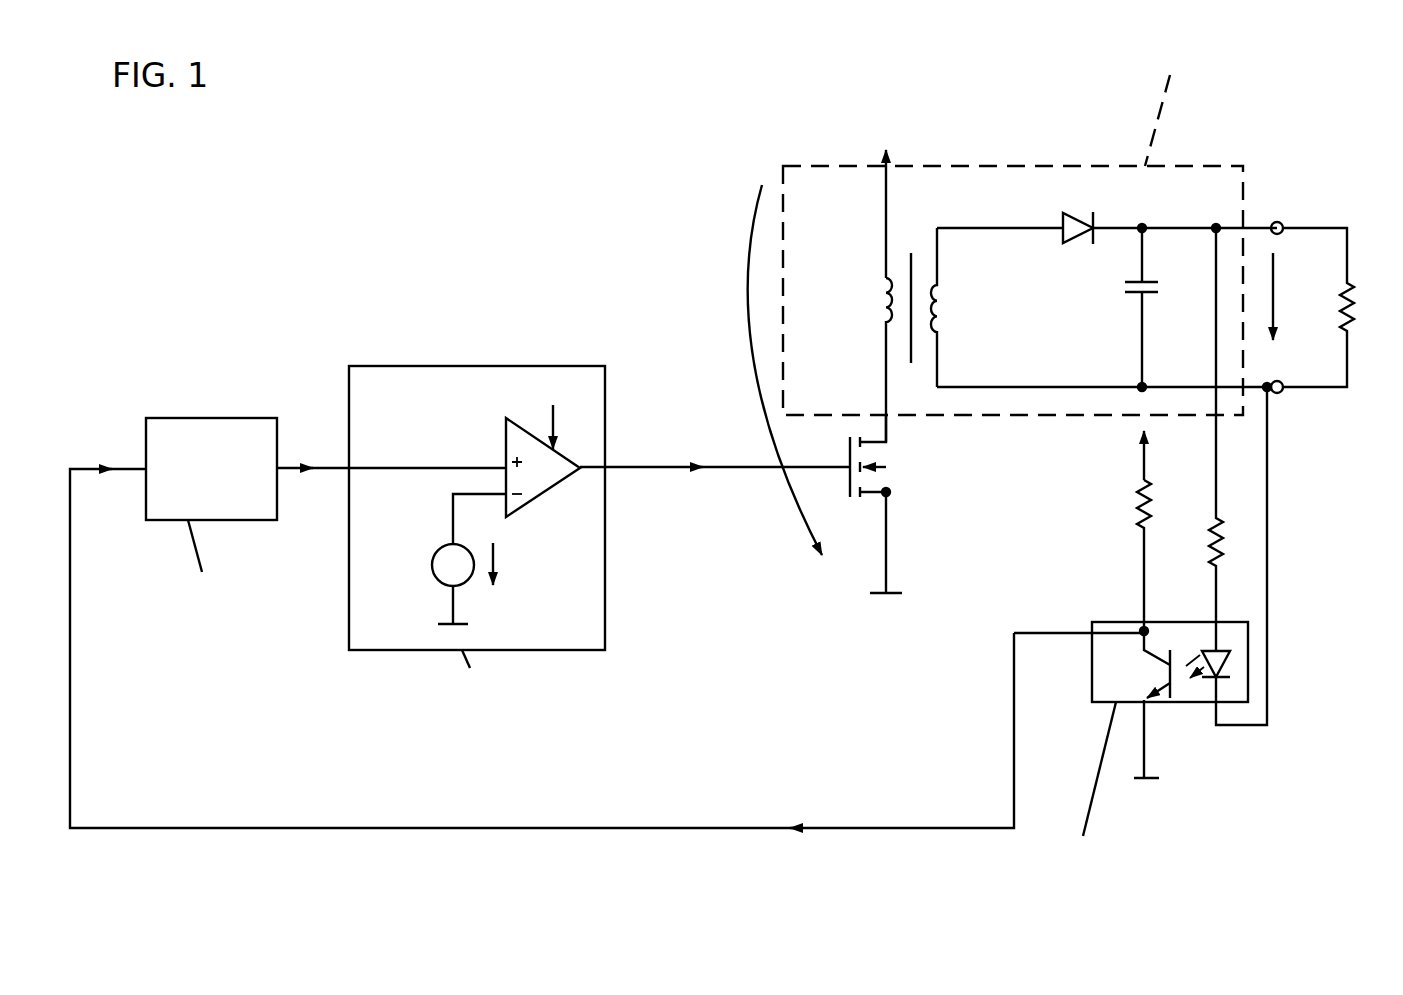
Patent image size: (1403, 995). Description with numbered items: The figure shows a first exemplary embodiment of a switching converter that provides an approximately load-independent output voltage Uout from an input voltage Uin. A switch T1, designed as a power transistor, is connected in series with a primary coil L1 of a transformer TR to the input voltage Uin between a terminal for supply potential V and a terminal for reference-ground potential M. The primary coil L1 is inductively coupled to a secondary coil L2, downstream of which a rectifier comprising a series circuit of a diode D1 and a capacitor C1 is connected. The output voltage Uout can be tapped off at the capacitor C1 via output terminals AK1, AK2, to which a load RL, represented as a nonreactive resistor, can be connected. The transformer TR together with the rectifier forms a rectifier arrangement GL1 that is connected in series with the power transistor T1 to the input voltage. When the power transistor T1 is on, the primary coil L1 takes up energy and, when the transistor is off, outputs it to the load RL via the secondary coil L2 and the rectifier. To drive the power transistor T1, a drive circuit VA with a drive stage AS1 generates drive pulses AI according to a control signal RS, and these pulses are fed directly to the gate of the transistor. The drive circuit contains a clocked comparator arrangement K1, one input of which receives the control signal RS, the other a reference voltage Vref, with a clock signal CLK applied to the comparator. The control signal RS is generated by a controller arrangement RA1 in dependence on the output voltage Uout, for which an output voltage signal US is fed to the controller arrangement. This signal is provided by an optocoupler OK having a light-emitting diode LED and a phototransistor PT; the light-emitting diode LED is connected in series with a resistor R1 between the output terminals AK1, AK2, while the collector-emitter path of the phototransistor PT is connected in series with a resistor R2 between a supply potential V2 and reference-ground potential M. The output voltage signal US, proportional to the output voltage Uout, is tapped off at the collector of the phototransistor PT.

The controller arrangement RA1 is at (203, 525).
The control signal RS is at (313, 449).
The drive circuit VA is at (388, 367).
The drive circuit AS1 is at (473, 365).
The clocked comparator arrangement K1 is at (464, 454).
The clock signal CLK is at (548, 412).
The reference voltage Vref is at (497, 559).
The drive pulses AI is at (715, 448).
The switch T1 is at (891, 522).
The reference-ground potential M is at (897, 615).
The input voltage Uin is at (754, 370).
The supply voltage V is at (857, 204).
The rectifier arrangement GL1 is at (983, 166).
The transformer TR is at (910, 322).
The primary coil L1 is at (863, 360).
The secondary coil L2 is at (958, 307).
The diode D1 is at (1107, 211).
The capacitor C1 is at (1161, 307).
The output terminal AK1 is at (1300, 206).
The output terminal AK2 is at (1299, 403).
The load RL is at (1342, 307).
The output voltage Uout is at (1303, 296).
The resistor R1 is at (1199, 437).
The resistor R2 is at (1118, 555).
The supply potential V2 is at (1166, 455).
The optocoupler OK is at (1184, 702).
The phototransistor PT is at (1141, 720).
The light-emitting diode LED is at (1220, 556).
The output voltage signal US is at (542, 667).